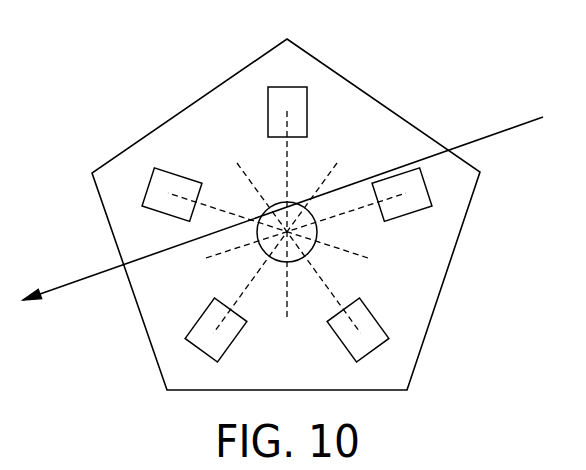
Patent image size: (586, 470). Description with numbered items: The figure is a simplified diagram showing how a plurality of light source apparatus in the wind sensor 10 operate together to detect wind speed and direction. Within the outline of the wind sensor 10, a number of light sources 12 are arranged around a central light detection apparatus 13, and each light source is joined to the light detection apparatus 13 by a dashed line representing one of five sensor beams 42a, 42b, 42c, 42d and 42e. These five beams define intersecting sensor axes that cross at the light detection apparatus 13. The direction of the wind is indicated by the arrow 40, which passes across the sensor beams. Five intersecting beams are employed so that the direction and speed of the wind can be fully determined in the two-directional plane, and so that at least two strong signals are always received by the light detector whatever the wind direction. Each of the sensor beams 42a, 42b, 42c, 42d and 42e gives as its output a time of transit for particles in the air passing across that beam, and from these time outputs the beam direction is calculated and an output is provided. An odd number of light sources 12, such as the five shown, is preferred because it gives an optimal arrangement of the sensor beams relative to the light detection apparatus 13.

The wind sensor 10 is at (391, 82).
The light source 12 is at (268, 113).
The light detection apparatus 13 is at (281, 262).
The arrow indicating wind direction 40 is at (515, 128).
The sensor beam 42a is at (362, 209).
The sensor beam 42b is at (335, 295).
The sensor beam 42c is at (242, 295).
The sensor beam 42d is at (216, 209).
The sensor beam 42e is at (287, 153).